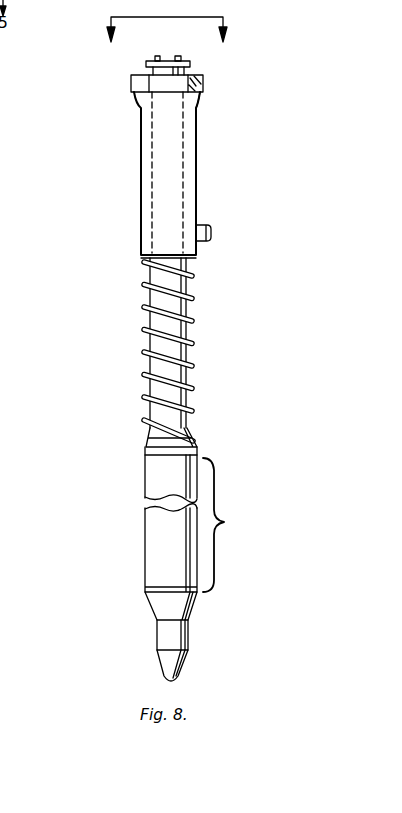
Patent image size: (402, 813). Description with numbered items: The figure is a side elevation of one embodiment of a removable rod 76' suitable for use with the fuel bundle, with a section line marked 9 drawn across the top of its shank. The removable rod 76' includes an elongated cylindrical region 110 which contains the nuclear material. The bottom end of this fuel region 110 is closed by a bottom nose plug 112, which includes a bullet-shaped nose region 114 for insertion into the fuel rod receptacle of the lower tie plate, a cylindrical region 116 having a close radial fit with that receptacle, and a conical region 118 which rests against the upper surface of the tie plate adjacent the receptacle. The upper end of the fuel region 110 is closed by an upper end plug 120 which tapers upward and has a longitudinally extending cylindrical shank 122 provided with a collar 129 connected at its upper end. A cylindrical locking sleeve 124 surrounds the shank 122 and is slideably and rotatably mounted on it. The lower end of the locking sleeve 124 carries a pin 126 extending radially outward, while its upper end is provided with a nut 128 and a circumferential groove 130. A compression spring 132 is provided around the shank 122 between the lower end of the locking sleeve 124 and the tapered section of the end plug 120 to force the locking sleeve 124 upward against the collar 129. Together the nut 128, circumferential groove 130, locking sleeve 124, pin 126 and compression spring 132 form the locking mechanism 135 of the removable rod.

The section line 9- 9 is at (168, 40).
The collar 129 is at (146, 64).
The nut 128 is at (203, 79).
The circumferential groove 130 is at (199, 107).
The locking sleeve 124 is at (140, 188).
The pin 126 is at (213, 231).
The compression spring 132 is at (187, 300).
The shank 122 is at (148, 363).
The locking mechanism 135 is at (124, 309).
The removable rod 76' is at (58, 464).
The upper end plug 120 is at (196, 447).
The elongated cylindrical region 110 is at (225, 521).
The conical region 118 is at (190, 607).
The cylindrical region 116 is at (189, 631).
The bullet-shaped nose region 114 is at (188, 663).
The bottom nose plug 112 is at (133, 648).